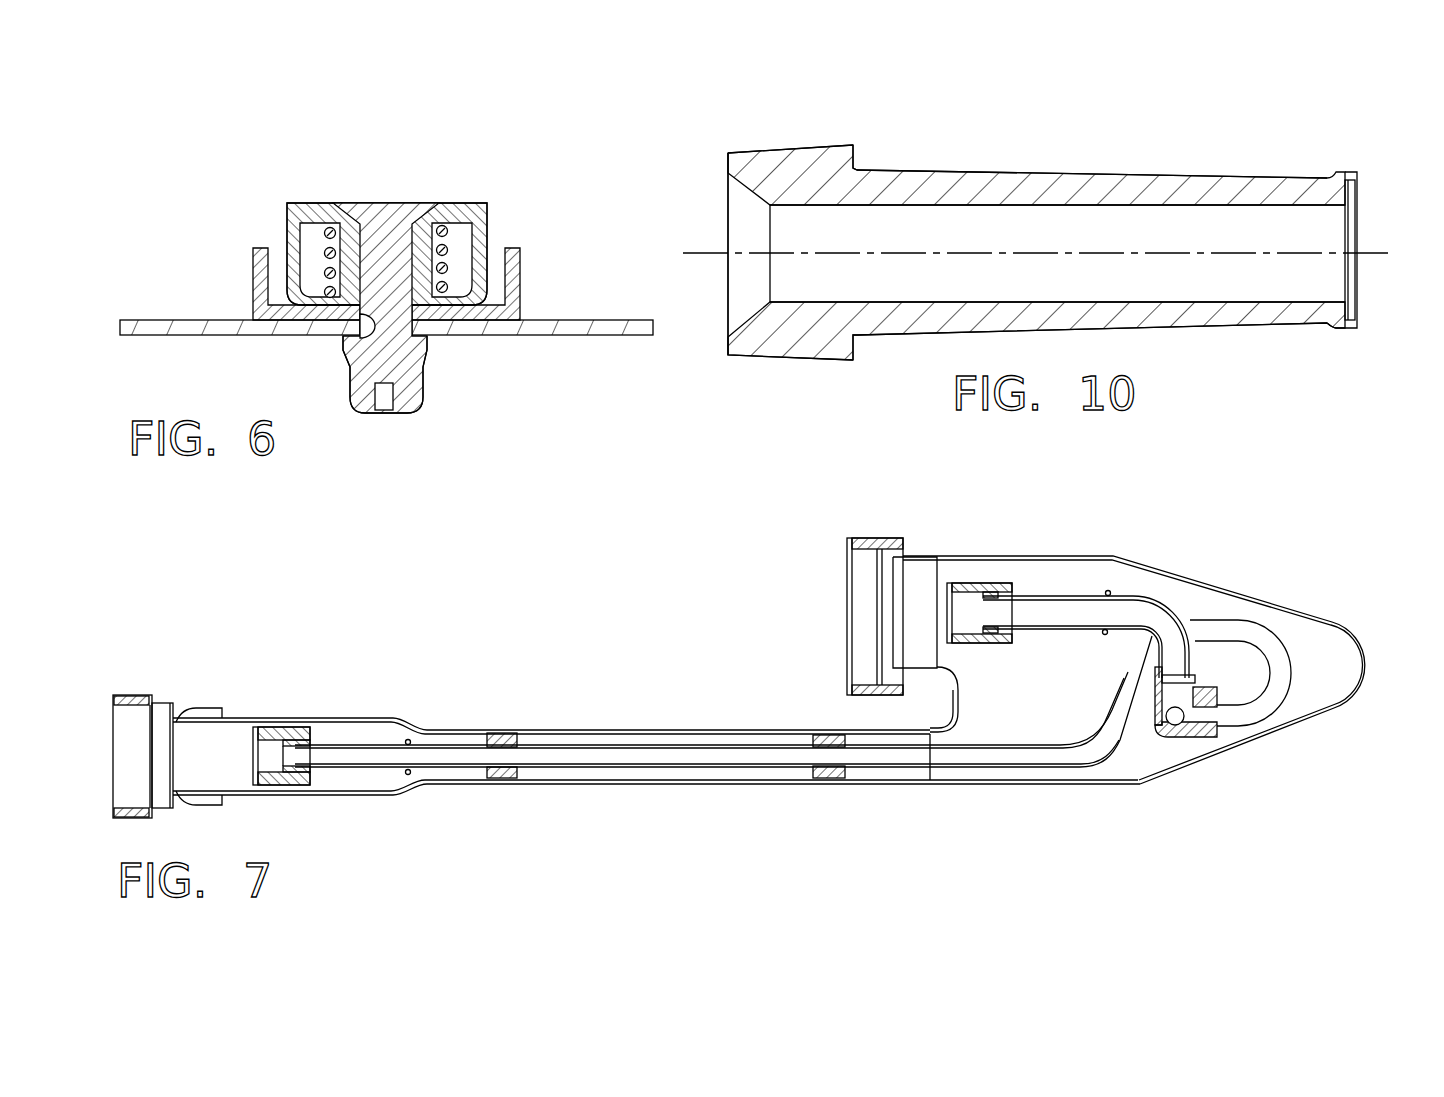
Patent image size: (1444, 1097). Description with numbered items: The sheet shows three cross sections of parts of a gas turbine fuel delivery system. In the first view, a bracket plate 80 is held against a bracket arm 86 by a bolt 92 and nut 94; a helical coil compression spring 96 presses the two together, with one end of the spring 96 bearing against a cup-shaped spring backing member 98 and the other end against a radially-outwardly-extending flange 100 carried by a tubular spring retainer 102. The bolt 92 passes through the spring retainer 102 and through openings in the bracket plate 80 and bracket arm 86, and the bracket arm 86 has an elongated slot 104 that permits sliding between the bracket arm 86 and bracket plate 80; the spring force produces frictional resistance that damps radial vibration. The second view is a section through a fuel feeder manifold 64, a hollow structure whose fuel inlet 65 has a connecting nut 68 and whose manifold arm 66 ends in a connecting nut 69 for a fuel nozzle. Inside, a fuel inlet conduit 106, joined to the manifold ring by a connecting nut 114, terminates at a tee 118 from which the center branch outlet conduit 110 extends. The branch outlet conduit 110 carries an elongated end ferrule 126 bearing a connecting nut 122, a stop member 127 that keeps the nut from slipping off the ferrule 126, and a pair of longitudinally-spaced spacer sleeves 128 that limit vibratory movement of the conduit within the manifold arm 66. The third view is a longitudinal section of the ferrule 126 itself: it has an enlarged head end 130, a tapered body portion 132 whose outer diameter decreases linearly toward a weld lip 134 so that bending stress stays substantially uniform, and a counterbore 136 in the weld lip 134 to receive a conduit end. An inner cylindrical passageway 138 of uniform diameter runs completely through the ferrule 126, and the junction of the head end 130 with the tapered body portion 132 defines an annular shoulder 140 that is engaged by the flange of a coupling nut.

In FIG. 6, the bracket plate 80 is at (597, 336).
In FIG. 6, the bracket arm 86 is at (521, 275).
In FIG. 6, the bolt 92 is at (387, 205).
In FIG. 6, the nut 94 is at (425, 375).
In FIG. 6, the helical coil compression spring 96 is at (446, 262).
In FIG. 6, the spring backing member 98 is at (477, 203).
In FIG. 6, the flange 100 is at (332, 203).
In FIG. 6, the spring retainer 102 is at (348, 248).
In FIG. 6, the elongated slot 104 is at (358, 340).
In FIG. 7, the fuel feeder manifold 64 is at (1152, 556).
In FIG. 7, the fuel inlet 65 is at (878, 587).
In FIG. 7, the manifold arm 66 is at (593, 786).
In FIG. 7, the connecting nut 68 is at (852, 537).
In FIG. 7, the connecting nut 69 is at (132, 698).
In FIG. 7, the fuel inlet conduit 106 is at (1170, 607).
In FIG. 7, the branch outlet conduit 110 is at (997, 768).
In FIG. 7, the connecting nut 114 is at (987, 583).
In FIG. 7, the tee 118 is at (1182, 738).
In FIG. 7, the connecting nut 122 is at (288, 727).
In FIG. 10, the ferrule 126 is at (1283, 106).
In FIG. 7, the ferrule 126 is at (353, 768).
In FIG. 7, the stop member 127 is at (410, 775).
In FIG. 7, the spacer sleeve 128 is at (503, 733).
In FIG. 10, the head end 130 is at (785, 145).
In FIG. 10, the tapered body portion 132 is at (1177, 173).
In FIG. 10, the weld lip 134 is at (1351, 170).
In FIG. 10, the counterbore 136 is at (1352, 315).
In FIG. 10, the inner cylindrical passageway 138 is at (868, 302).
In FIG. 10, the annular shoulder 140 is at (855, 163).